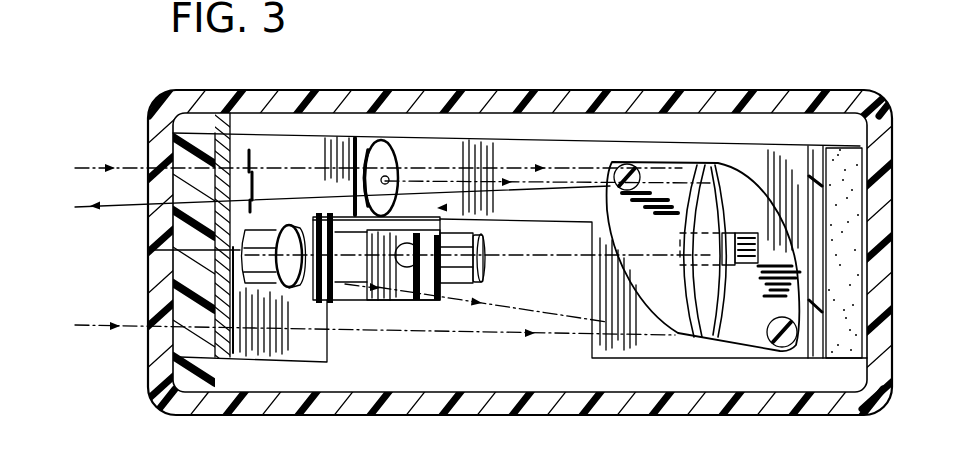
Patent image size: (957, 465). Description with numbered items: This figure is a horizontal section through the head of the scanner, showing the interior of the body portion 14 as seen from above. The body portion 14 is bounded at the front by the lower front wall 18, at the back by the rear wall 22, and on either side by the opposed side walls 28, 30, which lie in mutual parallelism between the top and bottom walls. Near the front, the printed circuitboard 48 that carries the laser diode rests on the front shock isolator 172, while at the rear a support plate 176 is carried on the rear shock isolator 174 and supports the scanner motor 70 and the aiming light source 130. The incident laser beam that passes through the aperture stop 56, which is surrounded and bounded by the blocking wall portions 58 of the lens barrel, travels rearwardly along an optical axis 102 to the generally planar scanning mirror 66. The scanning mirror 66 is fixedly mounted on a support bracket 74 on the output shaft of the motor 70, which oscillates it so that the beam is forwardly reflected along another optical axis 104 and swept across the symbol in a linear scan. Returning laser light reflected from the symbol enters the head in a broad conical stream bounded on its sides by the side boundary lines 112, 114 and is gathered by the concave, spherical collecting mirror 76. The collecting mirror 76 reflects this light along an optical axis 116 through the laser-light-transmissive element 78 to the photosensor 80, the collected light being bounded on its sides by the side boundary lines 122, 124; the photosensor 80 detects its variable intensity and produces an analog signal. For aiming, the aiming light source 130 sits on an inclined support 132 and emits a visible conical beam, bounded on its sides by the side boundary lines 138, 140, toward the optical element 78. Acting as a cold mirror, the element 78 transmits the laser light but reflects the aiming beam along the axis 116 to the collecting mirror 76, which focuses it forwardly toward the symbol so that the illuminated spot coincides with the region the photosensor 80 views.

The body portion 14 is at (663, 90).
The lower front wall 18 is at (150, 141).
The rear wall 22 is at (897, 112).
The side wall 28 is at (544, 396).
The side wall 30 is at (572, 93).
The printed circuitboard 48 is at (226, 118).
The aperture stop 56 is at (386, 178).
The blocking wall portions 58 is at (378, 135).
The scanning mirror 66 is at (725, 172).
The motor 70 is at (747, 320).
The support bracket 74 is at (751, 232).
The collecting mirror 76 is at (687, 337).
The laser-light-transmissive element 78 is at (322, 300).
The photosensor 80 is at (211, 256).
The optical axis 102 is at (528, 182).
The optical axis 104 is at (572, 193).
The side boundary line 112 is at (505, 162).
The side boundary line 114 is at (447, 333).
The optical axis 116 is at (547, 252).
The side boundary line 122 is at (508, 199).
The side boundary line 124 is at (603, 322).
The aiming light source 130 is at (484, 270).
The inclined support 132 is at (436, 299).
The side boundary line 138 is at (386, 252).
The side boundary line 140 is at (378, 278).
The front shock isolator 172 is at (193, 340).
The rear shock isolator 174 is at (853, 150).
The support plate 176 is at (718, 140).